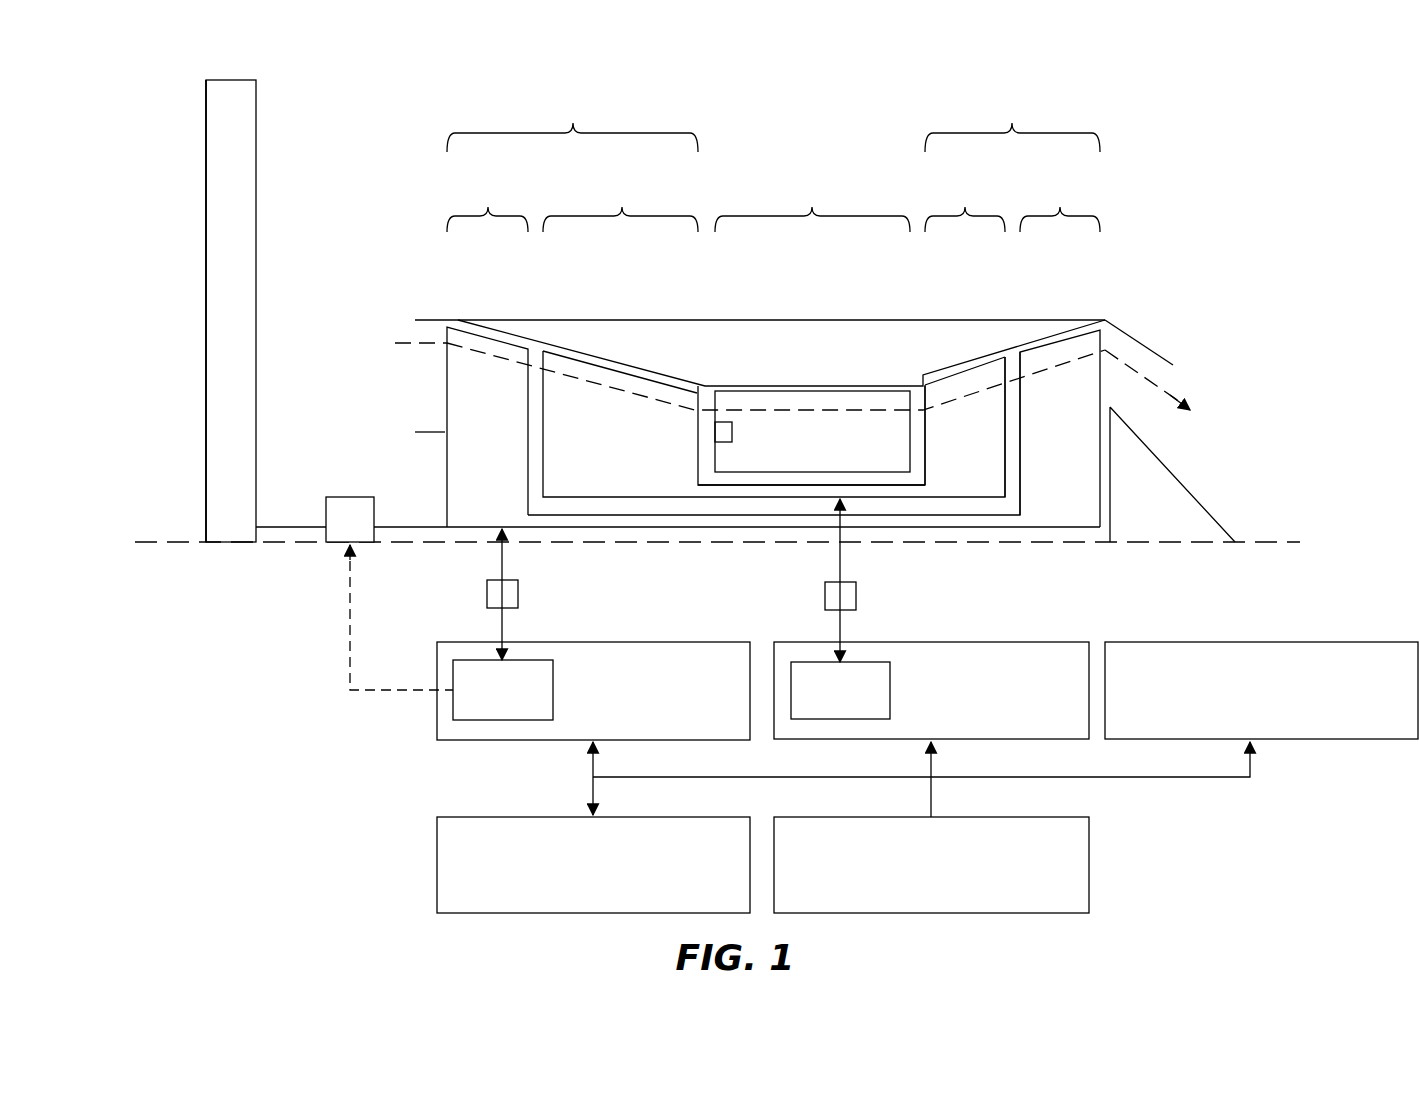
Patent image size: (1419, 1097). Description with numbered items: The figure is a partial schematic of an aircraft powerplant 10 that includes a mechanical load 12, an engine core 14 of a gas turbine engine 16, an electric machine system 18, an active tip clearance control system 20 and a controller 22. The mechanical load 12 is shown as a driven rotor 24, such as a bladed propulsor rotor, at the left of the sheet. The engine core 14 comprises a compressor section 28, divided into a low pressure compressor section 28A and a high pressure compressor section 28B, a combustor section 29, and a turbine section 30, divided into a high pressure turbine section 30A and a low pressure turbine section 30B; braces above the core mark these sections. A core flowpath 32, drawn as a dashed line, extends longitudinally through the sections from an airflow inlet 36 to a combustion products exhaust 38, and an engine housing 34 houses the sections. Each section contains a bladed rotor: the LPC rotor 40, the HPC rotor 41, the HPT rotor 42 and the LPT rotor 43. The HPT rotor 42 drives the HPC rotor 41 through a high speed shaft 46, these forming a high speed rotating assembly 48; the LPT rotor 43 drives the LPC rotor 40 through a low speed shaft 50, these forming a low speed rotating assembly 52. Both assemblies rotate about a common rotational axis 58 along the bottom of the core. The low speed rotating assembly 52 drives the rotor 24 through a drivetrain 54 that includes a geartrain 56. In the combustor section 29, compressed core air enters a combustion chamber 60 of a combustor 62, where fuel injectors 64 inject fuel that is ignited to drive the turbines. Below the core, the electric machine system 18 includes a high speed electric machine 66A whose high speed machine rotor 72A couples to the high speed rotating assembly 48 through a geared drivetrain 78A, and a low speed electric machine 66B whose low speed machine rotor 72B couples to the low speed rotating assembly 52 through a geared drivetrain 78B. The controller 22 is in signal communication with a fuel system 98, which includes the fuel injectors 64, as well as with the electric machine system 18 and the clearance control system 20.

The powerplant 10 is at (114, 122).
The mechanical load 12 is at (272, 83).
The engine core 14 is at (416, 265).
The gas turbine engine 16 is at (1182, 176).
The electric machine system 18 is at (415, 721).
The active tip clearance control system 20 is at (1249, 721).
The controller 22 is at (918, 895).
The rotor 24 is at (206, 212).
The compressor section 28 is at (572, 123).
The low pressure compressor section 28A is at (487, 204).
The high pressure compressor section 28B is at (620, 203).
The combustor section 29 is at (812, 203).
The turbine section 30 is at (1012, 122).
The high pressure turbine section 30A is at (965, 204).
The low pressure turbine section 30B is at (1060, 204).
The core flowpath 32 is at (598, 383).
The engine housing 34 is at (680, 318).
The airflow inlet 36 is at (395, 343).
The combustion products exhaust 38 is at (1192, 412).
The LPC rotor 40 is at (474, 478).
The HPC rotor 41 is at (607, 478).
The HPT rotor 42 is at (952, 478).
The LPT rotor 43 is at (1047, 478).
The high speed shaft 46 is at (877, 497).
The high speed rotating assembly 48 is at (787, 500).
The low speed shaft 50 is at (636, 530).
The low speed rotating assembly 52 is at (690, 546).
The drivetrain 54 is at (332, 473).
The geartrain 56 is at (338, 535).
The rotational axis 58 is at (1290, 541).
The combustion chamber 60 is at (807, 455).
The combustor 62 is at (808, 385).
The fuel injectors 64 is at (718, 420).
The high speed electric machine 66A is at (968, 721).
The low speed electric machine 66B is at (671, 721).
The high speed machine rotor 72A is at (821, 705).
The low speed machine rotor 72B is at (484, 705).
The geared drivetrain 78A is at (866, 598).
The geared drivetrain 78B is at (476, 587).
The fuel system 98 is at (580, 895).